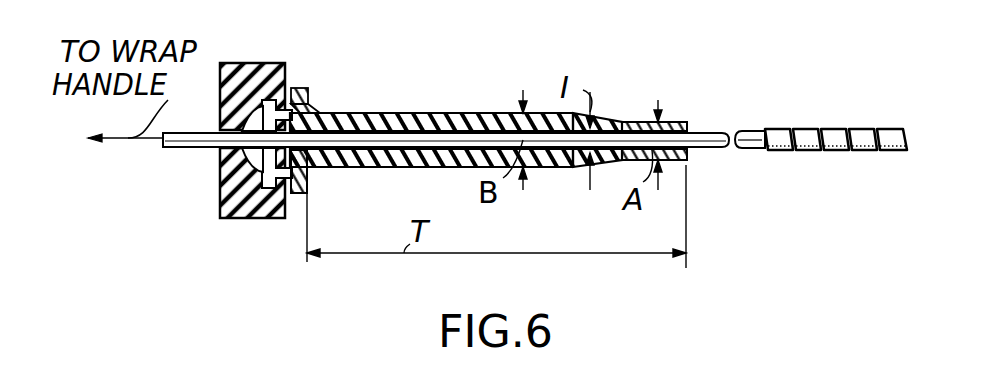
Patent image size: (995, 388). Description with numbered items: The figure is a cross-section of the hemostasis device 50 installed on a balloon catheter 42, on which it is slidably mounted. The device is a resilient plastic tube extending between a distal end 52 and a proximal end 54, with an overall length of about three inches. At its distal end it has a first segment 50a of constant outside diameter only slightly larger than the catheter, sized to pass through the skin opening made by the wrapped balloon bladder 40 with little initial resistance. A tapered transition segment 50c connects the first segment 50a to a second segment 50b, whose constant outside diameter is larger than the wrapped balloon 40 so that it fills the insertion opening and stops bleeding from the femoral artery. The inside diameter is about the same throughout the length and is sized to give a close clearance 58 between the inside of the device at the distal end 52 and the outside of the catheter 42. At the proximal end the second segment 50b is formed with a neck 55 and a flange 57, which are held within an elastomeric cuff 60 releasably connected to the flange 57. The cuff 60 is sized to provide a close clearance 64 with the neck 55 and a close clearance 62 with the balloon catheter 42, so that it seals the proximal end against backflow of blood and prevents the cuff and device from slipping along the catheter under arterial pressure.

The balloon bladder 40 is at (823, 131).
The balloon catheter 42 is at (190, 148).
The hemostasis device 50 is at (515, 140).
The first segment 50a is at (672, 122).
The second segment 50b is at (445, 113).
The transition segment 50c is at (600, 116).
The distal end 52 is at (670, 163).
The proximal end 54 is at (315, 172).
The neck 55 is at (305, 112).
The flange 57 is at (250, 205).
The close clearance 58 is at (690, 151).
The cuff 60 is at (247, 70).
The close clearance 62 is at (220, 131).
The close clearance 64 is at (299, 88).